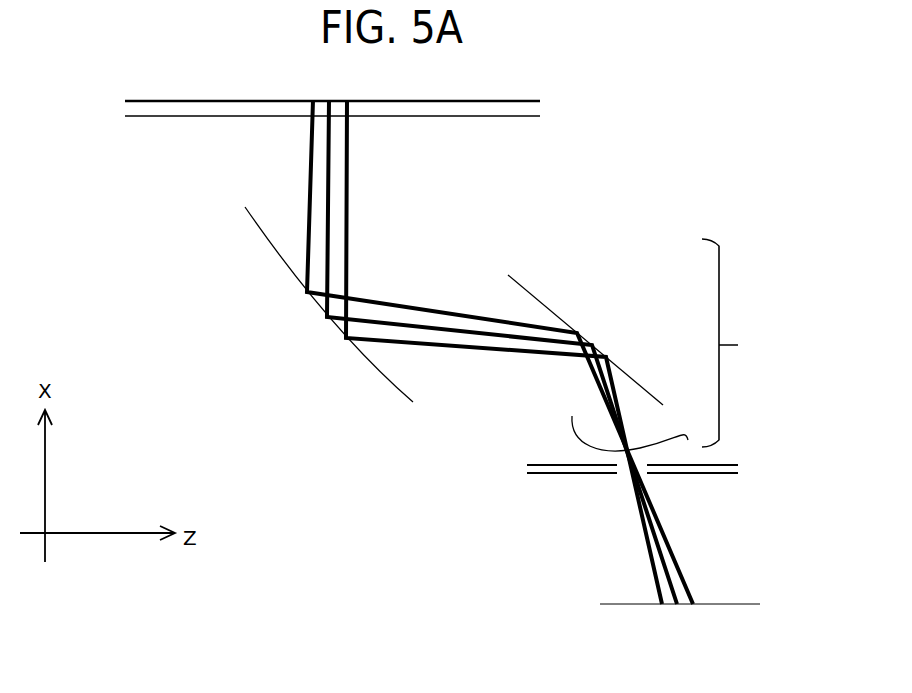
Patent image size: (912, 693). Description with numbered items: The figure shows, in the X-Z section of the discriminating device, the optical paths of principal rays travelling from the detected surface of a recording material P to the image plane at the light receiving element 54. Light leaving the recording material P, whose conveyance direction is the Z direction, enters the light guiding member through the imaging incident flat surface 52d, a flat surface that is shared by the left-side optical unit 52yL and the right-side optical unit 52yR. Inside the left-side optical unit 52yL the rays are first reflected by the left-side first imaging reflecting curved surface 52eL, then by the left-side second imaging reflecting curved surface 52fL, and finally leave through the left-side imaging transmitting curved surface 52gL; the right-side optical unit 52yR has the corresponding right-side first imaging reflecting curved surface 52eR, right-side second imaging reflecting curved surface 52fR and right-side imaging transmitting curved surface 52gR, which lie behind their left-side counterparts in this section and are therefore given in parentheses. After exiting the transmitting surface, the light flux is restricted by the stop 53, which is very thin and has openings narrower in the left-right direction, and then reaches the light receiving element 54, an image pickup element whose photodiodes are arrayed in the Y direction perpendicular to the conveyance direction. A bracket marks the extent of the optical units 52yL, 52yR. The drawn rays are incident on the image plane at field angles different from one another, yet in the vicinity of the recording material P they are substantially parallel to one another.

The recording material P is at (190, 100).
The imaging incident flat surface 52d is at (505, 118).
The left-side first imaging reflecting curved surface 52eL is at (270, 250).
The right-side first imaging reflecting curved surface 52eR is at (300, 304).
The left-side second imaging reflecting curved surface 52fL is at (558, 308).
The right-side second imaging reflecting curved surface 52fR is at (585, 340).
The left-side imaging transmitting curved surface 52gL is at (570, 426).
The right-side imaging transmitting curved surface 52gR is at (568, 433).
The left-side optical unit 52yL is at (756, 343).
The right-side optical unit 52yR is at (764, 343).
The stop 53 is at (558, 475).
The light receiving element 54 is at (630, 606).